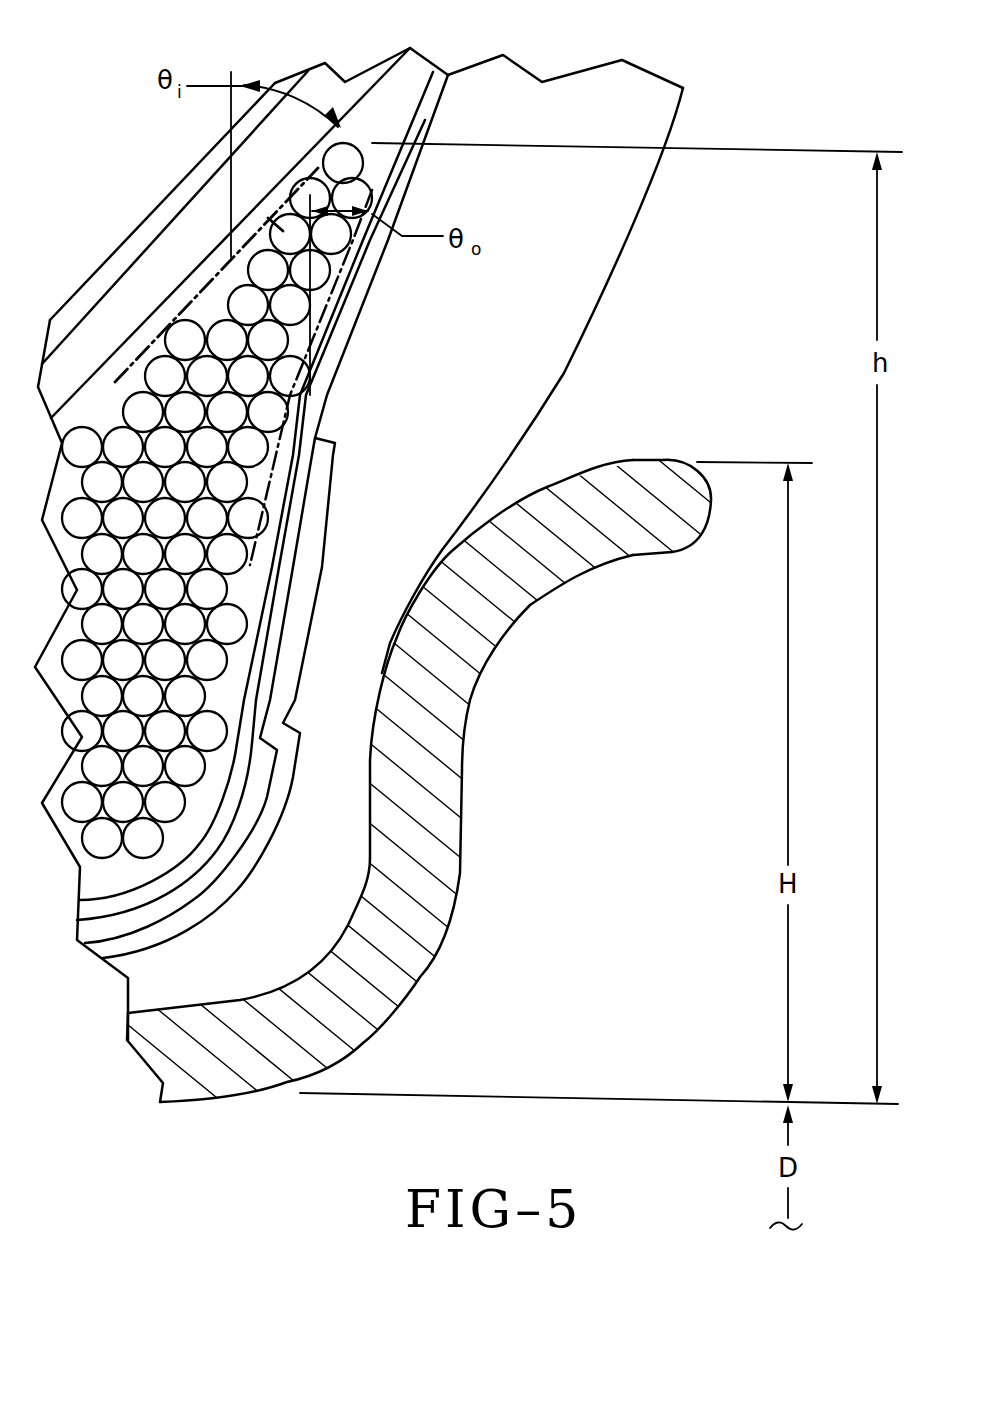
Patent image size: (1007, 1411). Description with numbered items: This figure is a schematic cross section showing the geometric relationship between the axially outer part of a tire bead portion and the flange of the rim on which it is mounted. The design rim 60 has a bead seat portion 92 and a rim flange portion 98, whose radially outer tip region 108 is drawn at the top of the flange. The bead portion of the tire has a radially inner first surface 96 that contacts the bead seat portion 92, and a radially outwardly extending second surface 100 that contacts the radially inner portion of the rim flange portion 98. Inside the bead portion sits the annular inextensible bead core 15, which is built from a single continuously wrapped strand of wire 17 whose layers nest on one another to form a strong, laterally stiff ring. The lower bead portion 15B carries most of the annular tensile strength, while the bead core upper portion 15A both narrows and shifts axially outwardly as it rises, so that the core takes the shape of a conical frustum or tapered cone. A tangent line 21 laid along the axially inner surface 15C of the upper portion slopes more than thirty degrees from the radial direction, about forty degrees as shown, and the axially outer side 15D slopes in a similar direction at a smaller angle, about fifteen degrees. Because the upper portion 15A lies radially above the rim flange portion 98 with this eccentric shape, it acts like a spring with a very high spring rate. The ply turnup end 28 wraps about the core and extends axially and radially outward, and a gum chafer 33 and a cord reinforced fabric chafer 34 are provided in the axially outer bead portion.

The bead core 15 is at (227, 618).
The bead core upper portion 15A is at (275, 222).
The lower bead portion 15B is at (143, 847).
The axially inner surface 15C is at (224, 274).
The axially outer side 15D is at (337, 281).
The wire 17 is at (207, 730).
The tangent line 21 is at (125, 383).
The ply turnup end 28 is at (427, 115).
The gum chafer 33 is at (600, 213).
The cord reinforced fabric chafer 34 is at (314, 492).
The design rim 60 is at (427, 887).
The bead seat portion 92 is at (238, 1057).
The radially inner first surface 96 is at (172, 1050).
The rim flange portion 98 is at (427, 823).
The radially outwardly extending second surface 100 is at (370, 792).
The flange tip 108 is at (652, 483).